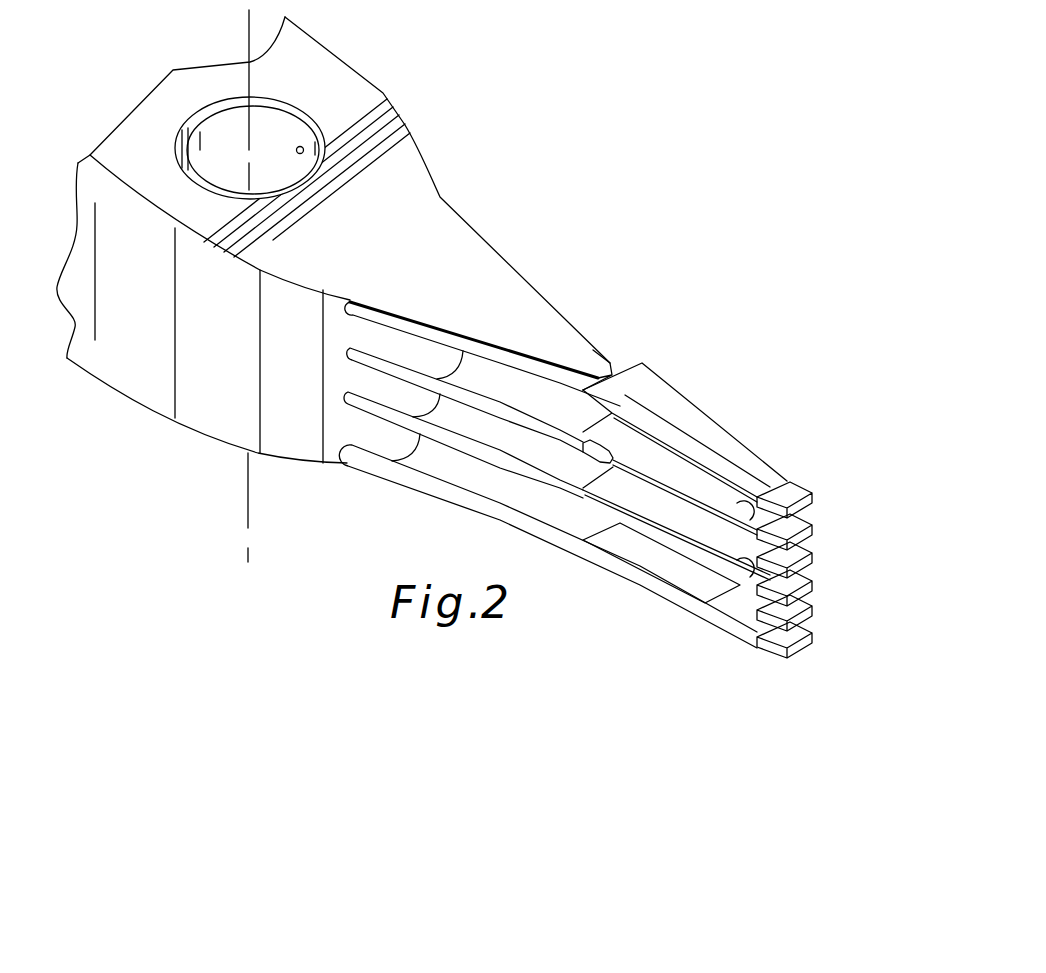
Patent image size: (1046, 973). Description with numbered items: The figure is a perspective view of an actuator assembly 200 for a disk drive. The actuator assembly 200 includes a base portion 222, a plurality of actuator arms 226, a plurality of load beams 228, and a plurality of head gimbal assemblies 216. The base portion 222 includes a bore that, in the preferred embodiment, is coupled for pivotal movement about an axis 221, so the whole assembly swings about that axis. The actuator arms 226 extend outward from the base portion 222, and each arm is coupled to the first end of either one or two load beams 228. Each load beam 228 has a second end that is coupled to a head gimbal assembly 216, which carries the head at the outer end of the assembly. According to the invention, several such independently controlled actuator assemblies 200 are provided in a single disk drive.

The actuator assembly 200 is at (549, 228).
The head gimbal assembly 216 is at (815, 510).
The axis 221 is at (247, 488).
The base portion 222 is at (330, 70).
The actuator arm 226 is at (568, 512).
The load beam 228 is at (667, 567).